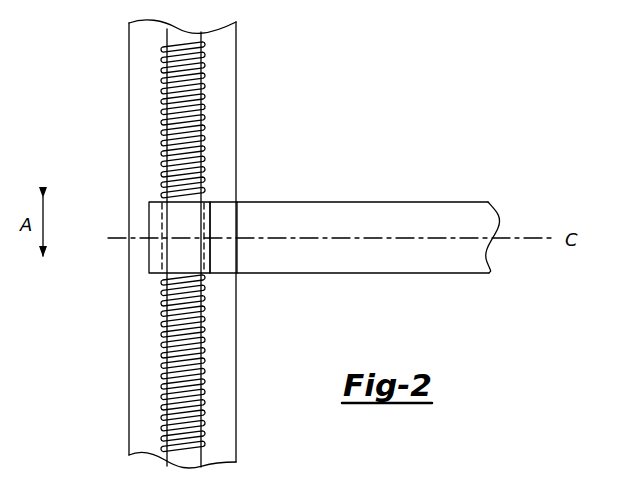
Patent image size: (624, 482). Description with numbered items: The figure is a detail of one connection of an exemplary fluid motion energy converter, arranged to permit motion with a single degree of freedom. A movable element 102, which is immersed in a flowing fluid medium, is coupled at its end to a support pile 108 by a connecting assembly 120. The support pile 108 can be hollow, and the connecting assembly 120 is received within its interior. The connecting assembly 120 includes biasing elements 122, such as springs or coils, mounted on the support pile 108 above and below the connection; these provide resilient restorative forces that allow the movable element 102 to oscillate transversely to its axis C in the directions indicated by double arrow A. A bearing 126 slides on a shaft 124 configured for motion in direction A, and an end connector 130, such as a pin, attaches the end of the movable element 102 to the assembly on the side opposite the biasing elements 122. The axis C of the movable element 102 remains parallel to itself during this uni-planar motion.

The movable element 102 is at (382, 215).
The support pile 108 is at (138, 119).
The connecting assembly 120 is at (341, 95).
The biasing element 122 is at (204, 82).
The shaft 124 is at (179, 220).
The bearing 126 is at (160, 260).
The end connector 130 is at (230, 256).